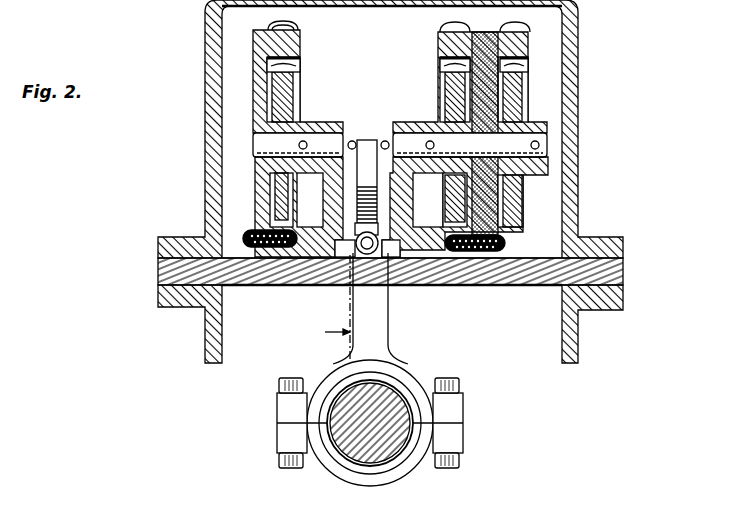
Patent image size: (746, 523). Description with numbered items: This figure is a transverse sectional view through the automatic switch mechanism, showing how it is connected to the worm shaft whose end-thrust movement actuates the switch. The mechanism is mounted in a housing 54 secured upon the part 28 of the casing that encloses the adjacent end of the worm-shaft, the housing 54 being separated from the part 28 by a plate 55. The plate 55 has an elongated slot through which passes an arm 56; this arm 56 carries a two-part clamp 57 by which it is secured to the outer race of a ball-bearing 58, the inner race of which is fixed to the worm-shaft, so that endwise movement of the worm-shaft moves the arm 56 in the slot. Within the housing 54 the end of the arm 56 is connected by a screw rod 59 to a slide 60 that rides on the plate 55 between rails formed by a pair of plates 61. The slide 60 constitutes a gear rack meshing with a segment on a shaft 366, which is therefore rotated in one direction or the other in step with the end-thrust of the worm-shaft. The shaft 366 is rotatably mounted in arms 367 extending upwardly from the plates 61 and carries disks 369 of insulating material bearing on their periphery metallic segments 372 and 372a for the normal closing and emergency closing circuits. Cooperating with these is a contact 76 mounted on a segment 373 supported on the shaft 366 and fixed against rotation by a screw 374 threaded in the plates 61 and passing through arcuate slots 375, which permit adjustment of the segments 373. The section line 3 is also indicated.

The section line 3 is at (326, 307).
The part of the casing 28 is at (578, 333).
The housing 54 is at (578, 118).
The plate 55 is at (478, 275).
The arm 56 is at (375, 302).
The two-part clamp 57 is at (290, 438).
The ball-bearing 58 is at (343, 460).
The screw rod 59 is at (365, 254).
The slide 60 is at (412, 245).
The plates 61 is at (298, 250).
The contact 76 is at (462, 33).
The shaft 366 is at (548, 145).
The arms 367 is at (327, 122).
The disks of insulating material 369 is at (290, 90).
The metallic segment 372 is at (440, 68).
The metallic segment 372a is at (522, 72).
The segment 373 is at (262, 42).
The screw 374 is at (252, 235).
The arcuate slots 375 is at (258, 248).